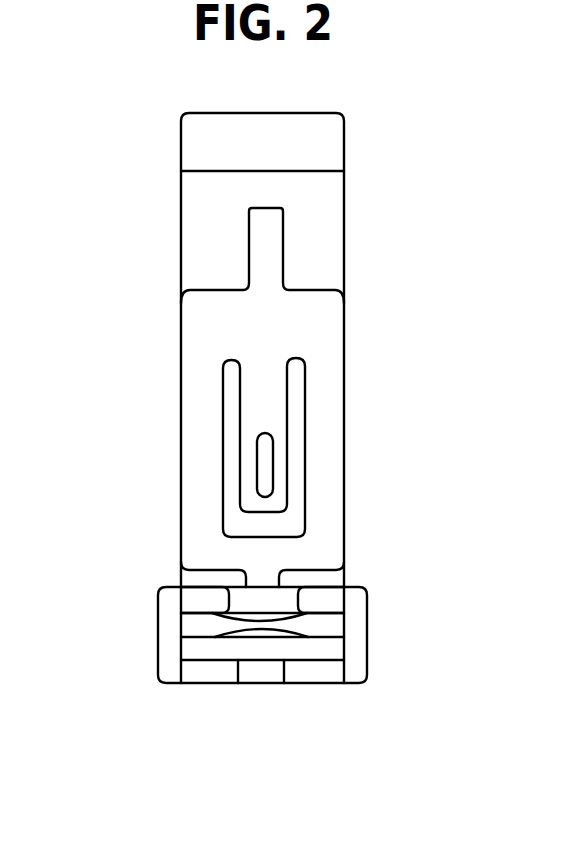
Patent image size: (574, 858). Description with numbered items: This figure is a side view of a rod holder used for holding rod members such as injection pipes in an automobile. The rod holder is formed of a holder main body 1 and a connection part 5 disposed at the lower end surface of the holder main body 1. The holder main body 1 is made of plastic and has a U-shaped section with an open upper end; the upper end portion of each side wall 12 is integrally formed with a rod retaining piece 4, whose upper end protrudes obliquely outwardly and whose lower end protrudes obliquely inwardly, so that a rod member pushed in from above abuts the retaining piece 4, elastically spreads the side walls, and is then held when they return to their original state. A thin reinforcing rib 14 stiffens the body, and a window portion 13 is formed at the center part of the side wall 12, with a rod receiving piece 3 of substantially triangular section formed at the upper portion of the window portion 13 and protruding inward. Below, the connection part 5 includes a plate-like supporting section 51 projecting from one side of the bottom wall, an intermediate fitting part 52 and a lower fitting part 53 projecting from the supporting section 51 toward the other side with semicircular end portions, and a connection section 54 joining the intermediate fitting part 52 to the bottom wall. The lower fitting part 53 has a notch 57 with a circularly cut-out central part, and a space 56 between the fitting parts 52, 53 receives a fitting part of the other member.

The holder main body 1 is at (348, 295).
The rod receiving piece 3 is at (282, 495).
The rod retaining piece 4 is at (181, 202).
The connection part 5 is at (328, 685).
The side wall 12 is at (330, 363).
The window portion 13 is at (302, 433).
The thin reinforcing rib 14 is at (265, 253).
The supporting section 51 is at (357, 628).
The intermediate fitting part 52 is at (195, 623).
The lower fitting part 53 is at (206, 673).
The connection section 54 is at (283, 597).
The space 56 is at (205, 651).
The notch 57 is at (268, 673).